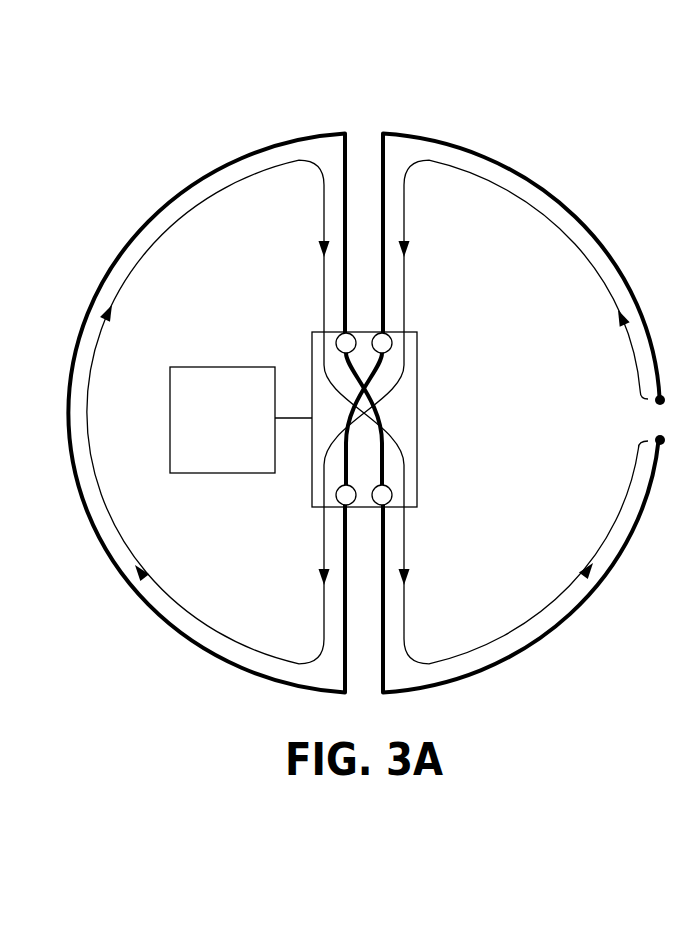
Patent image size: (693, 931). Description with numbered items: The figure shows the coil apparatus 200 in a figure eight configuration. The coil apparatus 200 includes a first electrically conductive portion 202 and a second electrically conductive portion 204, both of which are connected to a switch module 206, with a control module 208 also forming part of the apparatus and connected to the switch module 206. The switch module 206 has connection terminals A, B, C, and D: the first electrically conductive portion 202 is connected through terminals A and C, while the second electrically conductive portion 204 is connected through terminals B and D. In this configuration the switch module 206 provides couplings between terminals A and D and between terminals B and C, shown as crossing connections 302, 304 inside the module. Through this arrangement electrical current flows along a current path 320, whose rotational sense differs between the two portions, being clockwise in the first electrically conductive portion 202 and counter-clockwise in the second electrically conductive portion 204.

The coil apparatus 200 is at (414, 83).
The first electrically conductive portion 202 is at (206, 170).
The second electrically conductive portion 204 is at (522, 167).
The switch module 206 is at (372, 415).
The control module 208 is at (200, 367).
The first crossover flow path 302 is at (346, 443).
The second crossover flow path 304 is at (346, 443).
The current path 320 is at (324, 190).